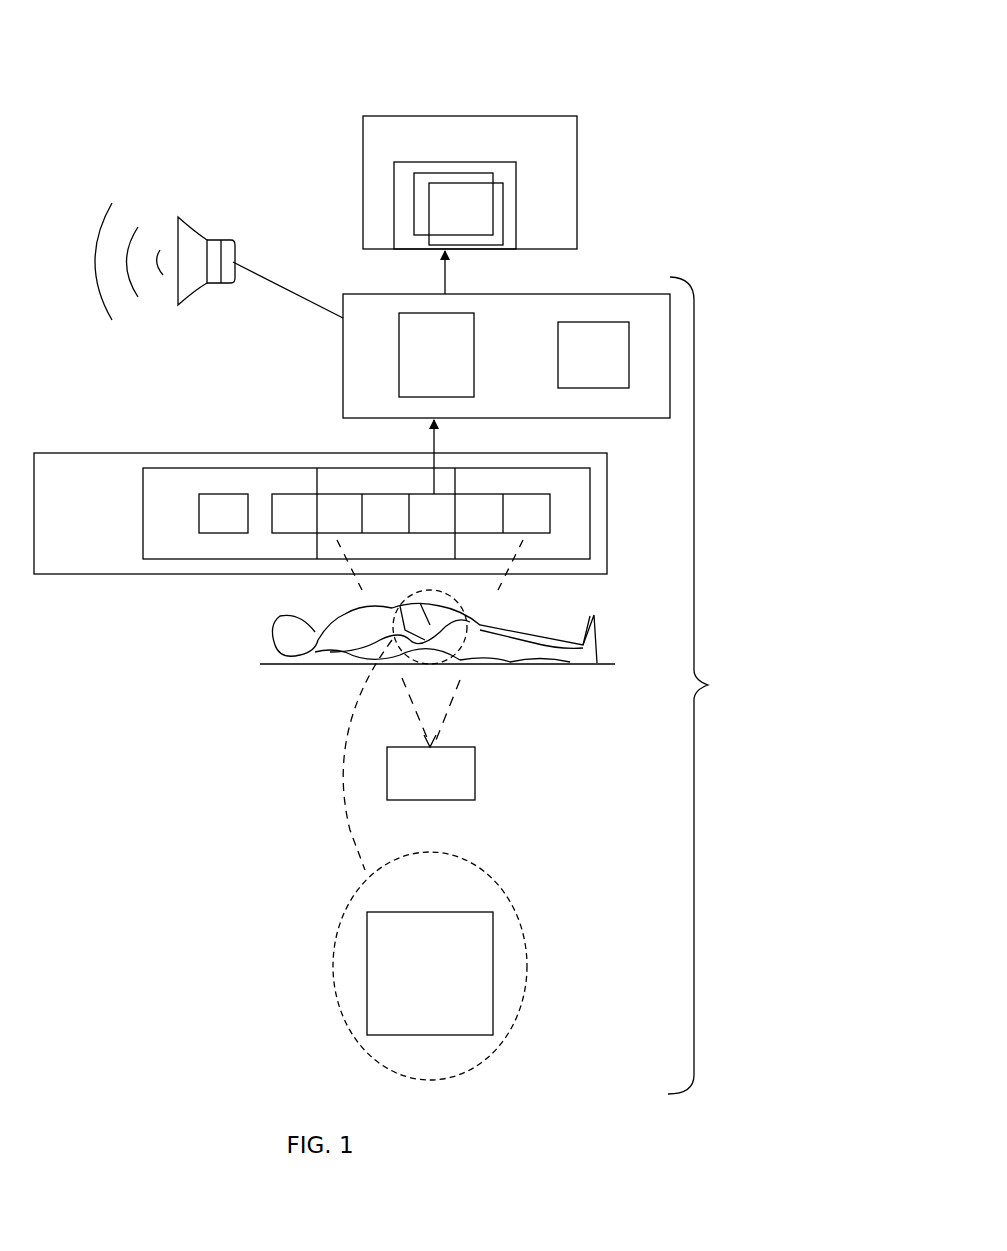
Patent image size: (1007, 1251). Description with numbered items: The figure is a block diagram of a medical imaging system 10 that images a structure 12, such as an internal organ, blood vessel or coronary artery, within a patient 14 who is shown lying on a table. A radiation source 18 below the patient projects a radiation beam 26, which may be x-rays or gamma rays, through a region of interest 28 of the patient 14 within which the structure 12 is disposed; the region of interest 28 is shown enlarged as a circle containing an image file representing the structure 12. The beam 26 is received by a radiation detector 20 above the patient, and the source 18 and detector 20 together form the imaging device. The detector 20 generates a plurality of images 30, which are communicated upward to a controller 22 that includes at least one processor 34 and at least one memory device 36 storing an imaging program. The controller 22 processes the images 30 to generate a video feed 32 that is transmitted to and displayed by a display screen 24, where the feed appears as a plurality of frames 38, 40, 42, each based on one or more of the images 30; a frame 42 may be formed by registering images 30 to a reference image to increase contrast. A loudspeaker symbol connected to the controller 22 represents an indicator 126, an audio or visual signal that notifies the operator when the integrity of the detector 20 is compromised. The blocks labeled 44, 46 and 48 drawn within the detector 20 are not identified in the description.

The medical imaging system 10 is at (564, 56).
The structure 12 is at (387, 975).
The patient 14 is at (340, 613).
The radiation source 18 is at (475, 773).
The radiation detector 20 is at (607, 535).
The controller 22 is at (343, 354).
The display screen 24 is at (363, 180).
The radiation beam 26 is at (447, 718).
The region of interest 28 is at (467, 612).
The images 30 is at (188, 513).
The video feed 32 is at (445, 270).
The processor 34 is at (436, 355).
The memory device 36 is at (593, 355).
The frame 38 is at (503, 232).
The frame 40 is at (492, 173).
The frame 42 is at (493, 207).
The patient data set 44 is at (177, 468).
The image data sequence 46 is at (335, 470).
The storage unit 48 is at (590, 496).
The indicator 126 is at (195, 222).